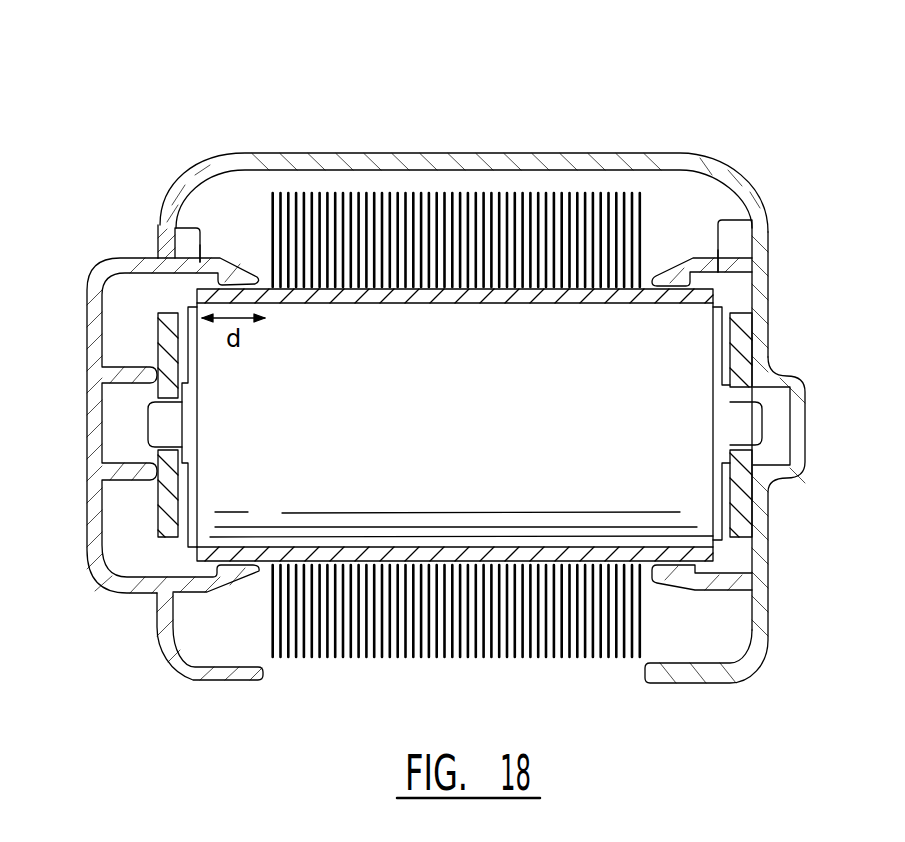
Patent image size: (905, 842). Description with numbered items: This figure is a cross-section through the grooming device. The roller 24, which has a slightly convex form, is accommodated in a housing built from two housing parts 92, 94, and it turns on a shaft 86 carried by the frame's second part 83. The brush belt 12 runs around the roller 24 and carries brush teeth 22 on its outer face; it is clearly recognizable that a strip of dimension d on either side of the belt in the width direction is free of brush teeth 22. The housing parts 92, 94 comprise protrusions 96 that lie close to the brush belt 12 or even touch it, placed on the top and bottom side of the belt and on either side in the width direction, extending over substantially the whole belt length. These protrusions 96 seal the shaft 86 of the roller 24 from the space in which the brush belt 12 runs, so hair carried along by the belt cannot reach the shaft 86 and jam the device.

The housing part 92 is at (203, 157).
The housing part 94 is at (497, 165).
The brush teeth 22 is at (640, 222).
The protrusions 96 is at (162, 227).
The second part 83 is at (160, 347).
The shafts 86 is at (160, 428).
The brush belt 12 is at (343, 290).
The roller 24 is at (497, 446).